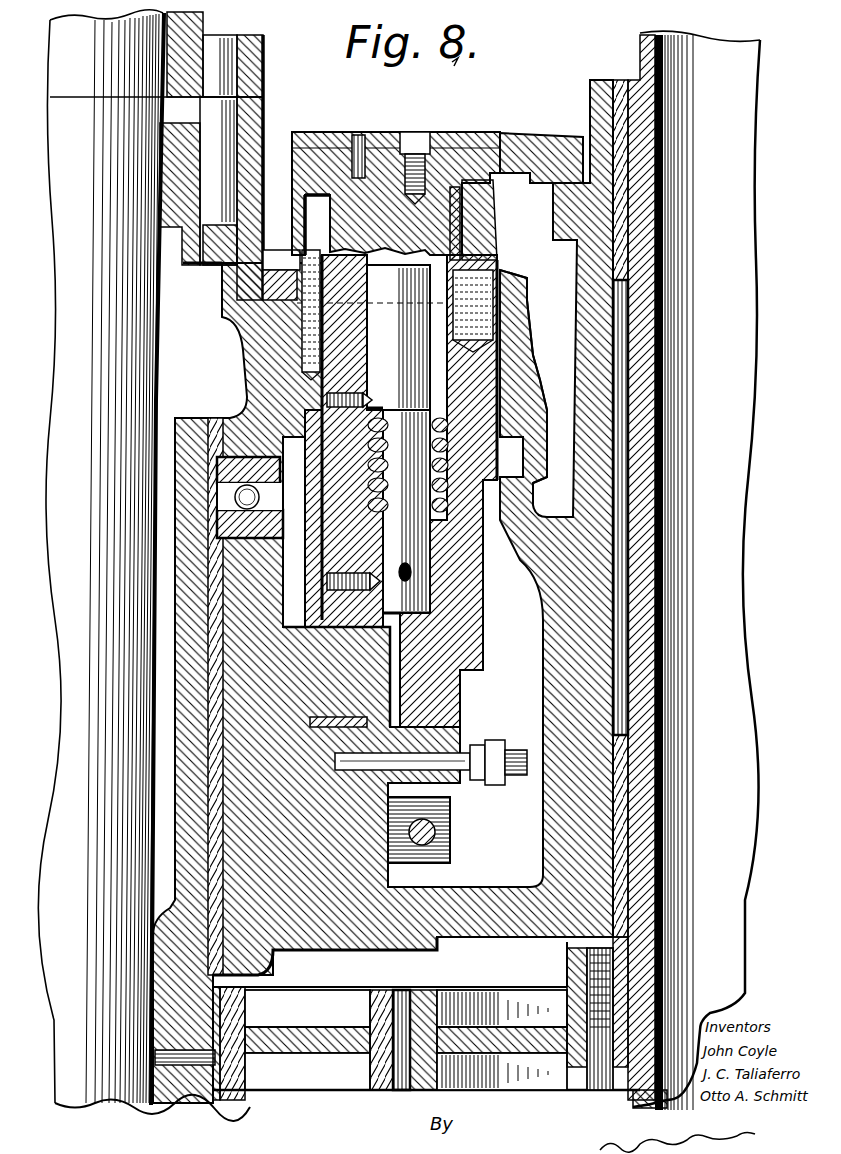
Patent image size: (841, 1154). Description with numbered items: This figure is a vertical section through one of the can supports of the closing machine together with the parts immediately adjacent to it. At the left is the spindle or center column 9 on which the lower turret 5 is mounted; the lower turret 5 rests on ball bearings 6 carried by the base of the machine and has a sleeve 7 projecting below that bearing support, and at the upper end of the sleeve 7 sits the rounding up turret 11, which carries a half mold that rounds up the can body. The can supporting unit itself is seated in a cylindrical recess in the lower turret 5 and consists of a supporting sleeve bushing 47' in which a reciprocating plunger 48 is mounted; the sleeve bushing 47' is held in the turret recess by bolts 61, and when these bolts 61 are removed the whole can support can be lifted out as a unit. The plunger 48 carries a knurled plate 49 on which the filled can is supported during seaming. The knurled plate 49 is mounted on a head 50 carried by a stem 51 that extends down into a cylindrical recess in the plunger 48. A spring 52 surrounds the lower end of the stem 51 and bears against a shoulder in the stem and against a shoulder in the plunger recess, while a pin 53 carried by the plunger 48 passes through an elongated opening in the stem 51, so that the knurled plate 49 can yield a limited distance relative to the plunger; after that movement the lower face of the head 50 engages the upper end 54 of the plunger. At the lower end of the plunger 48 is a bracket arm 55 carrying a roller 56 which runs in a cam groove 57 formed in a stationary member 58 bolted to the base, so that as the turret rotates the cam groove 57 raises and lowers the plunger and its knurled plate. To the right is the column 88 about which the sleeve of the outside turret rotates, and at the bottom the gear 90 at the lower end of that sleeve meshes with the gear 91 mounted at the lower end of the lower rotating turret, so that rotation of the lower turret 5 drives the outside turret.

The lower turret 5 is at (247, 312).
The ball bearings 6 is at (238, 497).
The sleeve 7 is at (190, 588).
The spindle or center column 9 is at (75, 832).
The rounding up turret 11 is at (195, 33).
The supporting sleeve bushing 47' is at (511, 331).
The plunger 48 is at (440, 578).
The knurled plate 49 is at (512, 140).
The head 50 is at (378, 160).
The stem 51 is at (373, 441).
The spring 52 is at (455, 435).
The pin 53 is at (405, 573).
The upper end of the plunger 54 is at (352, 157).
The bracket arm 55 is at (426, 790).
The roller 56 is at (395, 875).
The cam groove 57 is at (340, 700).
The stationary member 58 is at (312, 857).
The bolts 61 is at (320, 258).
The column 88 is at (733, 922).
The gear 90 is at (503, 1088).
The gear 91 is at (292, 1070).